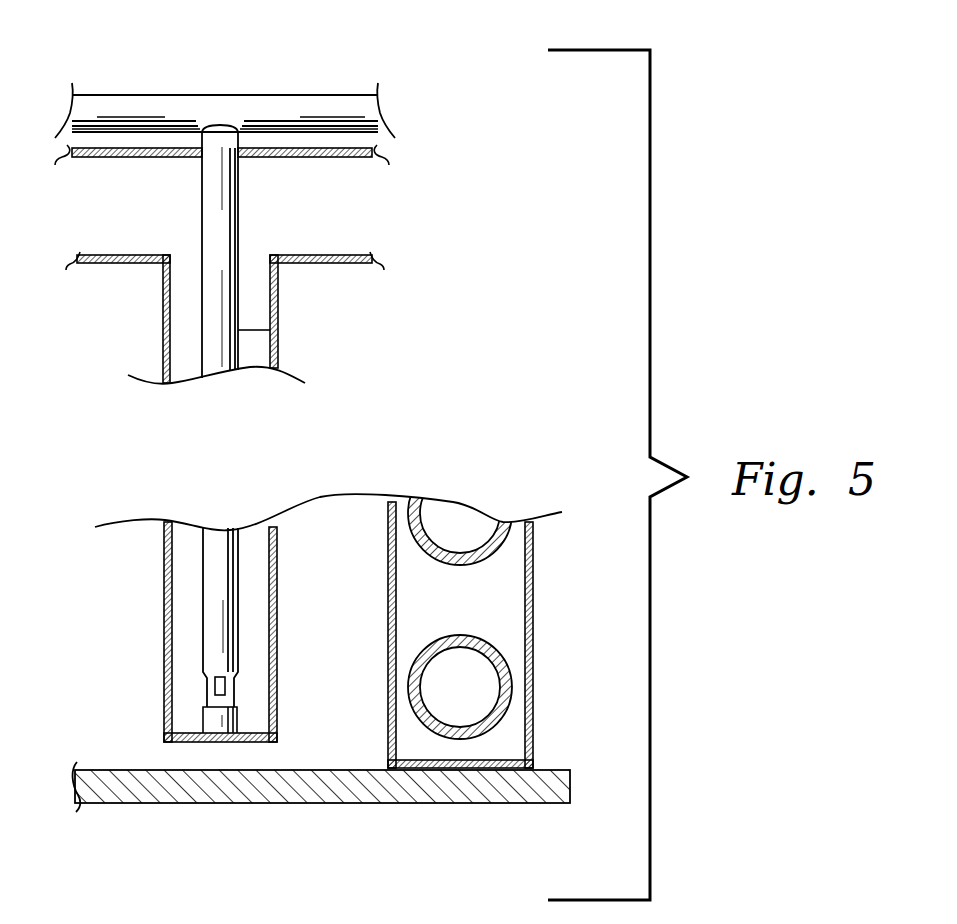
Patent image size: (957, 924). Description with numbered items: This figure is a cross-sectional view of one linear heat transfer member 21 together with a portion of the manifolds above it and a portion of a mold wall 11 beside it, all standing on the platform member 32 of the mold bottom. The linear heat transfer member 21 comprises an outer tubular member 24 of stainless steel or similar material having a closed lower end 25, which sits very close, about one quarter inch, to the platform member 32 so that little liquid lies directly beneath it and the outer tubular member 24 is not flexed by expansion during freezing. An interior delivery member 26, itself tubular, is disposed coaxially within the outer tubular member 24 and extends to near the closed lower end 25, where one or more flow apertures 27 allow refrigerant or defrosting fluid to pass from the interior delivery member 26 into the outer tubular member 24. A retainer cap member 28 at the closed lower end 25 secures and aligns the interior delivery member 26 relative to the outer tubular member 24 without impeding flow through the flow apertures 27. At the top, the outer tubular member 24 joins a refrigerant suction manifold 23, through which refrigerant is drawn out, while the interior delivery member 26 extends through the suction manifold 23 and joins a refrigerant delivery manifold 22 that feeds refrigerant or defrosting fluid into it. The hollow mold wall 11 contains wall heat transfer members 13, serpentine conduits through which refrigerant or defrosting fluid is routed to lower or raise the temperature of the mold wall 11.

The mold wall 11 is at (533, 665).
The wall heat transfer member 13 is at (480, 637).
The linear heat transfer member 21 is at (132, 578).
The refrigerant delivery manifold 22 is at (305, 93).
The refrigerant suction manifold 23 is at (337, 263).
The outer tubular member 24 is at (163, 326).
The closed lower end 25 is at (183, 742).
The interior delivery member 26 is at (270, 330).
The flow aperture 27 is at (233, 660).
The retainer cap member 28 is at (240, 717).
The platform member 32 is at (325, 770).